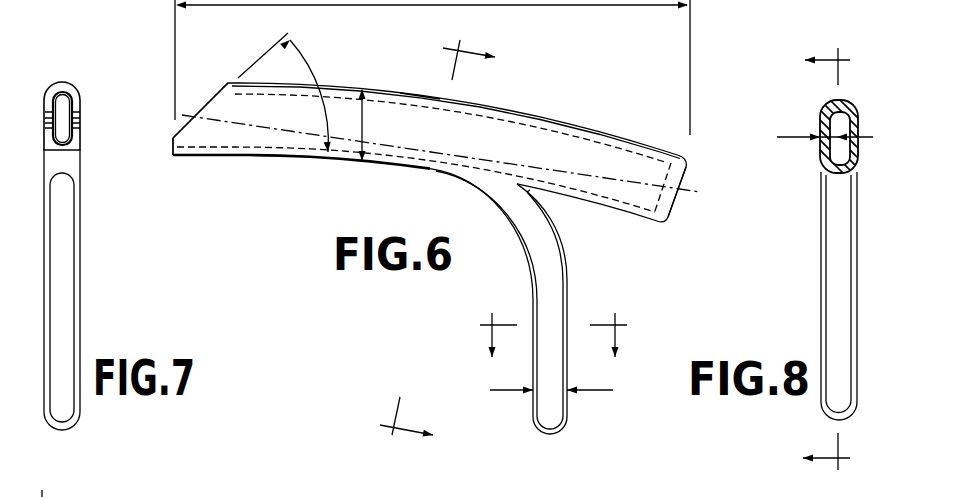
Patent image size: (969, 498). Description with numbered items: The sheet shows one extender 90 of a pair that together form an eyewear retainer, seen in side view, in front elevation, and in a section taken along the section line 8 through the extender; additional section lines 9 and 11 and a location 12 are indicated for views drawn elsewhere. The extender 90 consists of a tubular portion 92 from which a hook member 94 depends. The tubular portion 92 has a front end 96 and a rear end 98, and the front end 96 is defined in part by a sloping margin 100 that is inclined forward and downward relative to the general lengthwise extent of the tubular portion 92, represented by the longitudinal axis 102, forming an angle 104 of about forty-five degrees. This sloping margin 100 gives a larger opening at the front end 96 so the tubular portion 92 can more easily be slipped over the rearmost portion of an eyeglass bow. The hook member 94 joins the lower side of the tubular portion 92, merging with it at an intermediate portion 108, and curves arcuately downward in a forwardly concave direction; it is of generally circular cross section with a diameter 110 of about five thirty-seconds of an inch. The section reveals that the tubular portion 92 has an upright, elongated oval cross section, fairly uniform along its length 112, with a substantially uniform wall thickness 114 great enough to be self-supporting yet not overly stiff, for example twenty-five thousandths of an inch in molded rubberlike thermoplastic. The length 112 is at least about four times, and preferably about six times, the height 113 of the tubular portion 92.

In FIG. 6, the section line 8— 8 is at (435, 237).
In FIG. 8, the section line 9- 9 is at (831, 259).
In FIG. 6, the section line 11- 11 is at (556, 329).
In FIG. 7, the frame portion 12 is at (49, 481).
In FIG. 6, the extender 90 is at (572, 110).
In FIG. 8, the extender 90 is at (865, 110).
In FIG. 6, the tubular portion 92 is at (647, 140).
In FIG. 7, the tubular portion 92 is at (80, 96).
In FIG. 8, the tubular portion 92 is at (856, 142).
In FIG. 6, the hook member 94 is at (565, 273).
In FIG. 7, the hook member 94 is at (78, 307).
In FIG. 8, the hook member 94 is at (853, 340).
In FIG. 6, the front end 96 is at (172, 140).
In FIG. 6, the rear end 98 is at (683, 200).
In FIG. 6, the sloping margin 100 is at (215, 97).
In FIG. 6, the longitudinal axis 102 is at (242, 128).
In FIG. 6, the angle 104 is at (308, 72).
In FIG. 6, the intermediate portion 108 is at (425, 96).
In FIG. 6, the diameter 110 is at (513, 396).
In FIG. 6, the length 112 is at (640, 8).
In FIG. 6, the height 113 is at (364, 118).
In FIG. 8, the wall thickness 114 is at (808, 136).